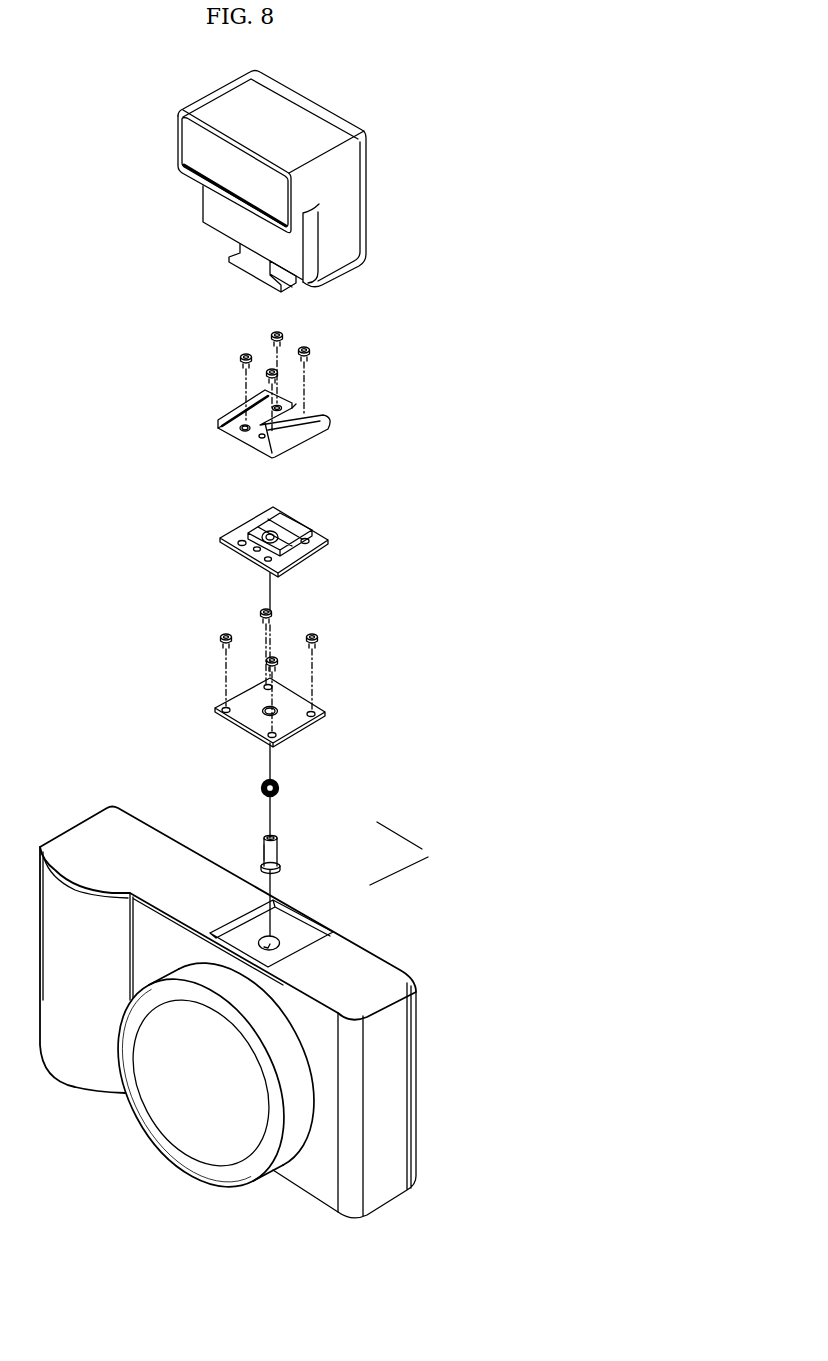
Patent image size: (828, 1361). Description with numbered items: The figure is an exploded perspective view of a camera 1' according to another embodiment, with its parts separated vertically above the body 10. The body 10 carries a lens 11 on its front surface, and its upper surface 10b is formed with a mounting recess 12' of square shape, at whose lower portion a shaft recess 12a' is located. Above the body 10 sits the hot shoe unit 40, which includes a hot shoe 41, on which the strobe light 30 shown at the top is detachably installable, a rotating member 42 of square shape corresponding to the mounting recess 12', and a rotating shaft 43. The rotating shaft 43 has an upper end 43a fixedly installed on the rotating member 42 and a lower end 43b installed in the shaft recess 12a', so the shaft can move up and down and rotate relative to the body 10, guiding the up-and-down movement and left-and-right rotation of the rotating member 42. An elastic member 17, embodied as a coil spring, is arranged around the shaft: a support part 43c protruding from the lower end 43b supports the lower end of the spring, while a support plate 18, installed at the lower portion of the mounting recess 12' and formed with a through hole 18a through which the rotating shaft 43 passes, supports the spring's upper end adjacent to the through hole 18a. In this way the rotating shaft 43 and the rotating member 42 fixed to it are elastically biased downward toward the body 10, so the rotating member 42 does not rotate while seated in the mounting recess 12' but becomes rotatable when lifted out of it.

The camera 1' is at (264, 644).
The strobe light 30 is at (376, 190).
The hot shoe unit 40 is at (321, 454).
The hot shoe 41 is at (330, 422).
The rotating member 42 is at (318, 533).
The support plate 18 is at (294, 678).
The through hole 18a is at (285, 708).
The elastic member 17 is at (281, 787).
The rotating shaft 43 is at (271, 834).
The upper end 43a is at (268, 838).
The lower end 43b is at (262, 866).
The support part 43c is at (283, 869).
The body 10 is at (264, 1012).
The upper surface 10b is at (400, 978).
The mounting recess 12' is at (312, 927).
The shaft recess 12a' is at (337, 934).
The lens 11 is at (182, 1110).